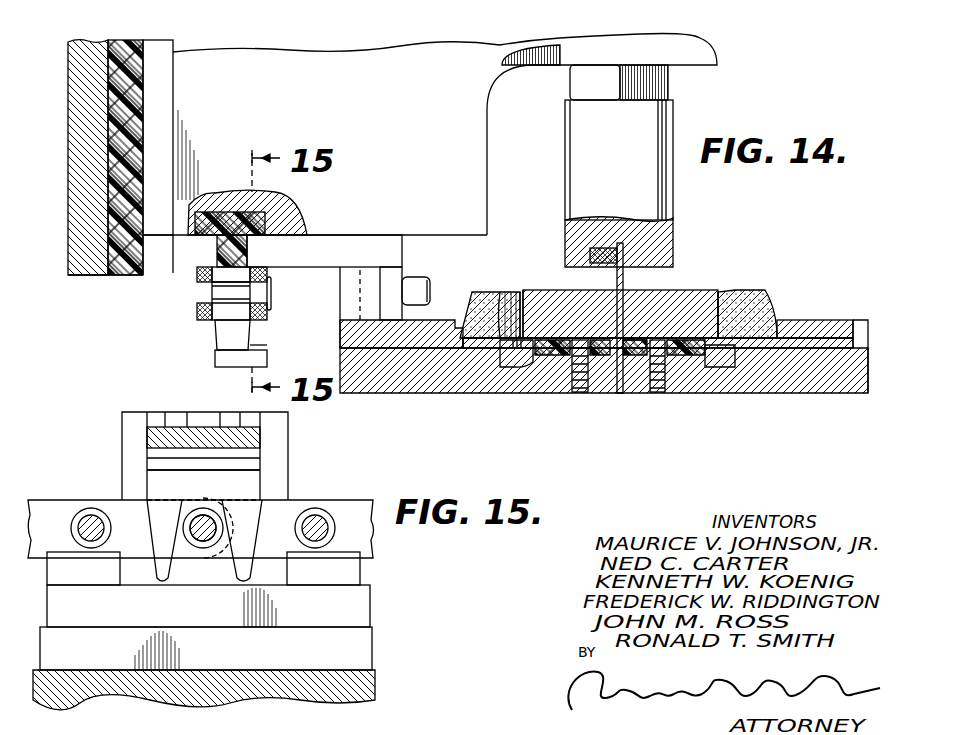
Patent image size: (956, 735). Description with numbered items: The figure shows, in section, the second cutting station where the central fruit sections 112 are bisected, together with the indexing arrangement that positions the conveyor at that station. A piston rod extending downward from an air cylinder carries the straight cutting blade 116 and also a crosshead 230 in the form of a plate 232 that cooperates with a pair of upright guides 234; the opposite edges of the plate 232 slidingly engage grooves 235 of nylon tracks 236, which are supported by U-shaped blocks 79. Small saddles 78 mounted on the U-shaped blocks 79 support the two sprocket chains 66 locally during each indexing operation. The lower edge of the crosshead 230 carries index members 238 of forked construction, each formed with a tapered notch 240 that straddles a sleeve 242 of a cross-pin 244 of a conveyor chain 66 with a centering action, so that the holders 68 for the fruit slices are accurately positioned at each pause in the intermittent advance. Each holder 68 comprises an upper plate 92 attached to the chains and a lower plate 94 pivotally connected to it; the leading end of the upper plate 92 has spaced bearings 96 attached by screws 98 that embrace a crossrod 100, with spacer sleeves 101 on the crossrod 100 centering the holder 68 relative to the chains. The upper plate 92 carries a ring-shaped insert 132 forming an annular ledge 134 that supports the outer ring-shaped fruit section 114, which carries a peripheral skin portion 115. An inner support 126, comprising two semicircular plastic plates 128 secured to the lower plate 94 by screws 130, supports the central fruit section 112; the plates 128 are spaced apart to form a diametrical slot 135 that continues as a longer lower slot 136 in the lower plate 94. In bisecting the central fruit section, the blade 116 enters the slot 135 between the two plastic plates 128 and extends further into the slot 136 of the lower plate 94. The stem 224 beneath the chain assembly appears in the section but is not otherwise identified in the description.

In FIG. 14, the sprocket chain 66 is at (193, 278).
In FIG. 15, the sprocket chain 66 is at (367, 496).
In FIG. 14, the holder 68 is at (773, 392).
In FIG. 14, the small saddle 78 is at (252, 347).
In FIG. 15, the small saddle 78 is at (370, 585).
In FIG. 15, the U-shaped block 79 is at (375, 688).
In FIG. 14, the upper plate 92 is at (858, 326).
In FIG. 14, the lower plate 94 is at (440, 375).
In FIG. 14, the bearing 96 is at (402, 268).
In FIG. 14, the screw 98 is at (340, 330).
In FIG. 14, the crossrod 100 is at (418, 282).
In FIG. 14, the spacer sleeve 101 is at (318, 268).
In FIG. 14, the central fruit section 112 is at (693, 302).
In FIG. 14, the ring-shaped fruit section 114 is at (723, 310).
In FIG. 14, the peripheral skin portion 115 is at (758, 312).
In FIG. 14, the straight cutting blade 116 is at (623, 280).
In FIG. 14, the inner support 126 is at (545, 357).
In FIG. 14, the semicircular plastic plate 128 is at (705, 362).
In FIG. 14, the screw 130 is at (572, 383).
In FIG. 14, the ring-shaped insert 132 is at (440, 330).
In FIG. 14, the annular ledge 134 is at (483, 345).
In FIG. 14, the diametrical slot 135 is at (632, 357).
In FIG. 14, the lower slot 136 is at (615, 392).
In FIG. 14, the stem 224 is at (233, 325).
In FIG. 14, the crosshead 230 is at (685, 26).
In FIG. 14, the plate 232 is at (410, 97).
In FIG. 15, the plate 232 is at (250, 443).
In FIG. 14, the upright guide 234 is at (85, 157).
In FIG. 15, the upright guide 234 is at (122, 432).
In FIG. 14, the groove 235 is at (160, 47).
In FIG. 14, the nylon track 236 is at (133, 30).
In FIG. 15, the nylon track 236 is at (173, 418).
In FIG. 14, the index member 238 is at (218, 252).
In FIG. 15, the index member 238 is at (250, 492).
In FIG. 15, the tapered notch 240 is at (233, 560).
In FIG. 14, the sleeve 242 is at (227, 288).
In FIG. 15, the sleeve 242 is at (207, 552).
In FIG. 14, the cross-pin 244 is at (271, 298).
In FIG. 15, the cross-pin 244 is at (193, 522).